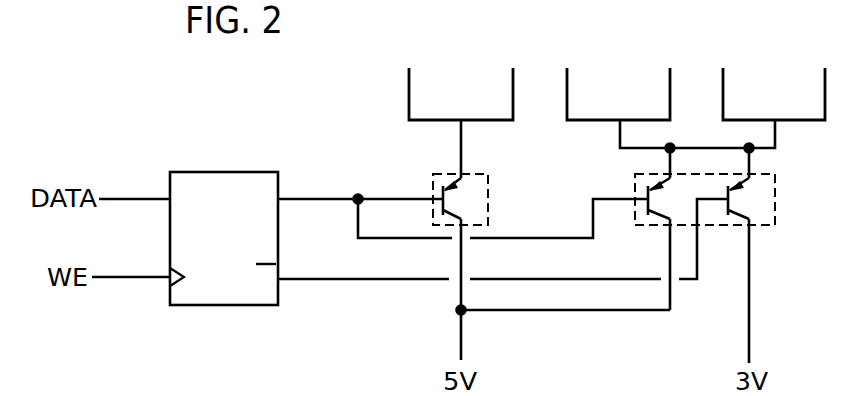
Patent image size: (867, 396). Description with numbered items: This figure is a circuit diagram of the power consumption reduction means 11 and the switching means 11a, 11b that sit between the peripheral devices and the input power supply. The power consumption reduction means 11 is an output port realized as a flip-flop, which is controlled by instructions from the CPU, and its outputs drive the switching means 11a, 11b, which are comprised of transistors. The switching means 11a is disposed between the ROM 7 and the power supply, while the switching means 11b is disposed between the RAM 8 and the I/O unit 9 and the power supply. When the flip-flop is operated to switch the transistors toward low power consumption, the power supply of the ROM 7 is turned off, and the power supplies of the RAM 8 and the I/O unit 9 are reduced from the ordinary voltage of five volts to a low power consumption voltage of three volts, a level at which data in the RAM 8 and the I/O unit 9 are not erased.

The ROM 7 is at (409, 100).
The RAM 8 is at (567, 101).
The I/O unit 9 is at (723, 100).
The power consumption reduction means 11 is at (208, 172).
The switching means 11a is at (431, 184).
The switching means 11b is at (633, 186).